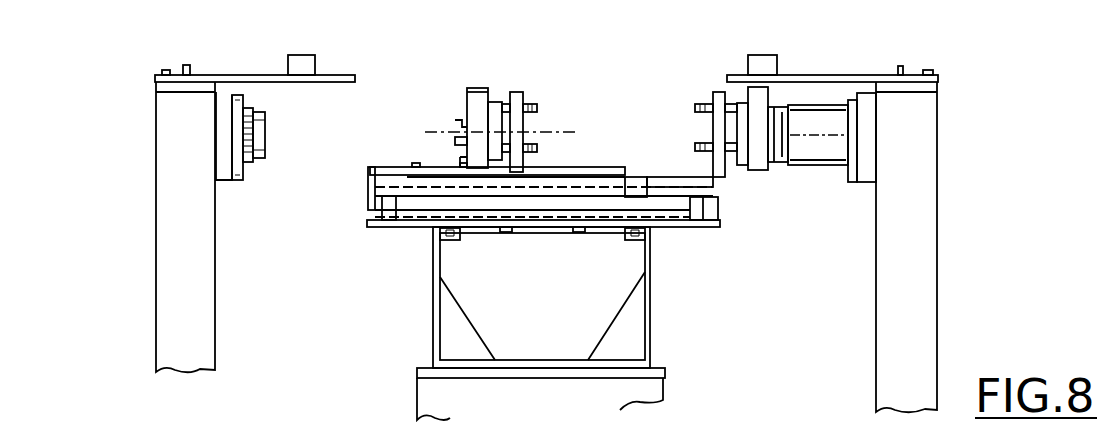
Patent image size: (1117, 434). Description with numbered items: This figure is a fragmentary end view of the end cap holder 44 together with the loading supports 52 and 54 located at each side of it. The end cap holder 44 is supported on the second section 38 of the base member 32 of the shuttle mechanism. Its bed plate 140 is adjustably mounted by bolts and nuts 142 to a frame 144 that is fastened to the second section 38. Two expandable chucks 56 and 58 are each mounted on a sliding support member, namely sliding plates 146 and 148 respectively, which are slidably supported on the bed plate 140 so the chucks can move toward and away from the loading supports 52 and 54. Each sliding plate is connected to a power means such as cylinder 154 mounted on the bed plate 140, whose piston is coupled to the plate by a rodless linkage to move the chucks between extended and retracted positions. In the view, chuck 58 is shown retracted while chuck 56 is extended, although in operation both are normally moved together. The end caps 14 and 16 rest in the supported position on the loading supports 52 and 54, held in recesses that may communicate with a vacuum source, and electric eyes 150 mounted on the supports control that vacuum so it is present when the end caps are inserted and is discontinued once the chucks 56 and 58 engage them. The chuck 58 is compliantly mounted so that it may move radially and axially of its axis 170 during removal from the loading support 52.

The end cap 14 is at (260, 132).
The end cap 16 is at (802, 123).
The base member 32 is at (420, 372).
The second section 38 is at (665, 367).
The end cap holder 44 is at (681, 234).
The loading support 52 is at (225, 157).
The loading support 54 is at (867, 167).
The expandable chuck 56 is at (760, 105).
The expandable chuck 58 is at (460, 122).
The bed plate 140 is at (720, 222).
The bolts and nuts 142 is at (458, 240).
The frame 144 is at (648, 313).
The sliding plate 146 is at (545, 175).
The sliding plate 148 is at (618, 177).
The electric eyes 150 is at (302, 62).
The cylinder 154 is at (410, 207).
The axis 170 is at (425, 132).